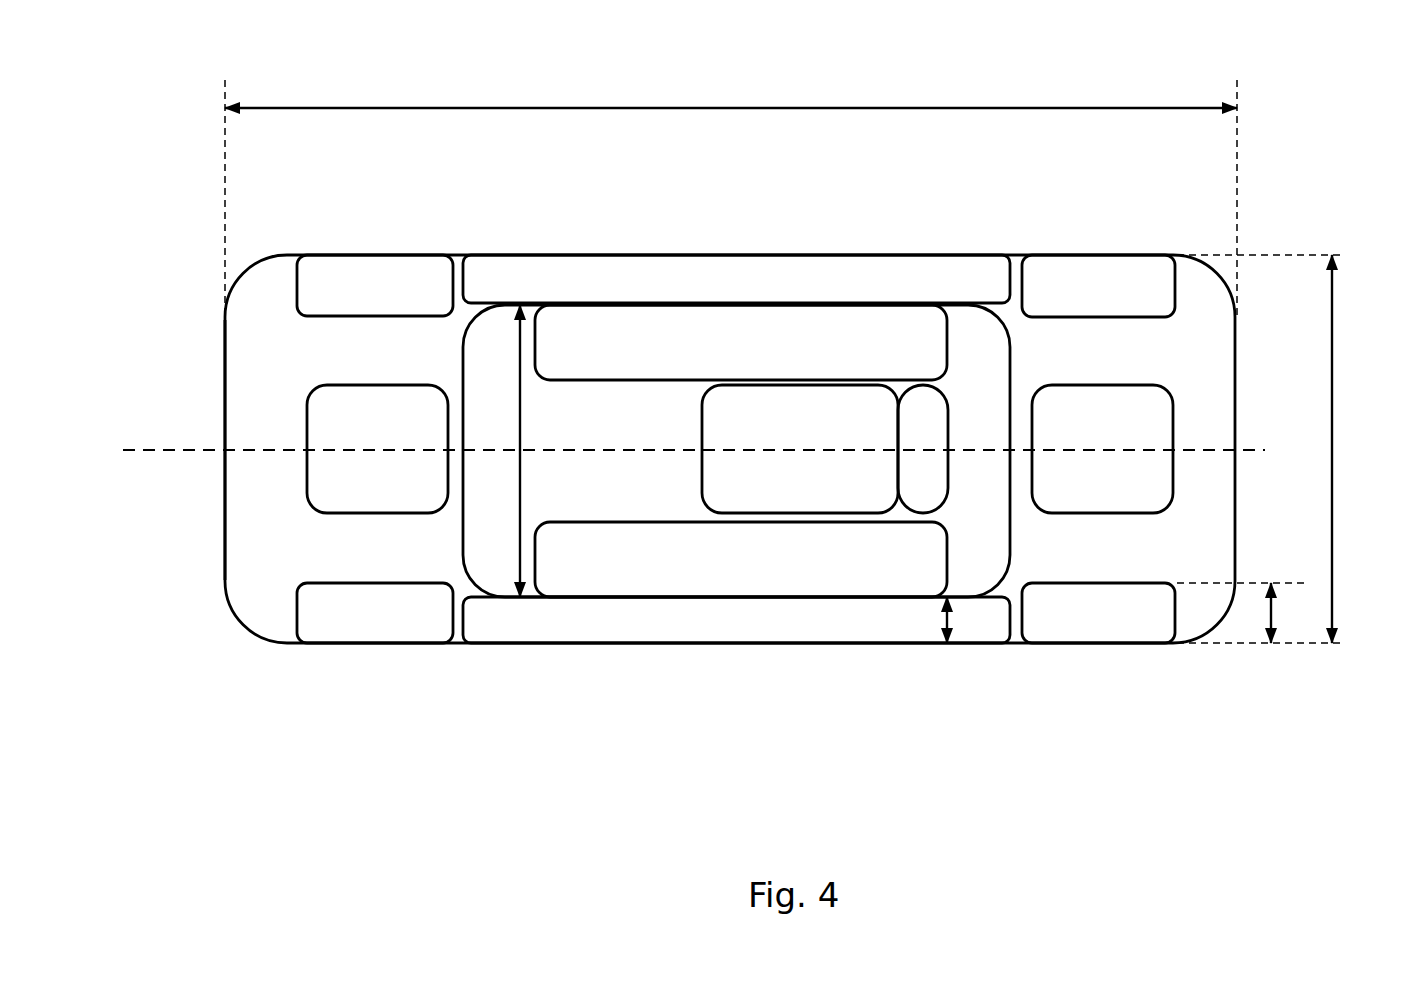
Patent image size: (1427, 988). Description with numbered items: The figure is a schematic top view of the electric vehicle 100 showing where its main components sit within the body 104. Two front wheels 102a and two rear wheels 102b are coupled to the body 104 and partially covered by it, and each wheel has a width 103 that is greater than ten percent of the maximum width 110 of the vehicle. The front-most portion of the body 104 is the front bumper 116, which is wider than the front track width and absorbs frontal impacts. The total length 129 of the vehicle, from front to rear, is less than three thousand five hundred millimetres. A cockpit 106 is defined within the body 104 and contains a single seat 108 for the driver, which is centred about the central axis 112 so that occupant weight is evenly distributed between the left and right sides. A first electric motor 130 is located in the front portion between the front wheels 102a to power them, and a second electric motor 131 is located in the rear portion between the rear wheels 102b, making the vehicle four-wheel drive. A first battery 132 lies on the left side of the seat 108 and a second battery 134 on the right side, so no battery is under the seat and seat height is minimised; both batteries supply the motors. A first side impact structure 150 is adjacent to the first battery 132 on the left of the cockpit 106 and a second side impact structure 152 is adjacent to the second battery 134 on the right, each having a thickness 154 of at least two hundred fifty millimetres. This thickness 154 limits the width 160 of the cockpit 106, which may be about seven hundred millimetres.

The electric vehicle 100 is at (462, 770).
The front wheels 102a is at (355, 632).
The rear wheels 102b is at (1095, 627).
The wheel width 103 is at (1272, 613).
The body 104 is at (255, 638).
The cockpit 106 is at (1012, 522).
The seat 108 is at (948, 418).
The maximum width 110 is at (1333, 432).
The central axis 112 is at (168, 450).
The front bumper 116 is at (225, 410).
The total length 129 is at (763, 108).
The first electric motor 130 is at (307, 412).
The second electric motor 131 is at (1170, 400).
The first battery 132 is at (607, 578).
The second battery 134 is at (615, 328).
The first side impact structure 150 is at (778, 628).
The second side impact structure 152 is at (737, 277).
The thickness 154 is at (948, 620).
The cockpit width 160 is at (520, 488).